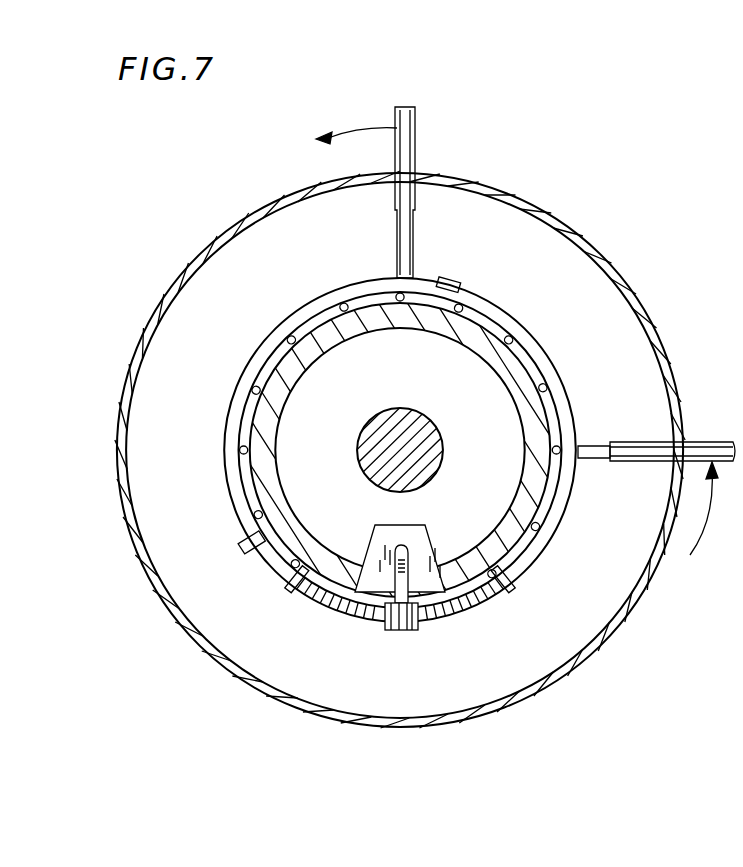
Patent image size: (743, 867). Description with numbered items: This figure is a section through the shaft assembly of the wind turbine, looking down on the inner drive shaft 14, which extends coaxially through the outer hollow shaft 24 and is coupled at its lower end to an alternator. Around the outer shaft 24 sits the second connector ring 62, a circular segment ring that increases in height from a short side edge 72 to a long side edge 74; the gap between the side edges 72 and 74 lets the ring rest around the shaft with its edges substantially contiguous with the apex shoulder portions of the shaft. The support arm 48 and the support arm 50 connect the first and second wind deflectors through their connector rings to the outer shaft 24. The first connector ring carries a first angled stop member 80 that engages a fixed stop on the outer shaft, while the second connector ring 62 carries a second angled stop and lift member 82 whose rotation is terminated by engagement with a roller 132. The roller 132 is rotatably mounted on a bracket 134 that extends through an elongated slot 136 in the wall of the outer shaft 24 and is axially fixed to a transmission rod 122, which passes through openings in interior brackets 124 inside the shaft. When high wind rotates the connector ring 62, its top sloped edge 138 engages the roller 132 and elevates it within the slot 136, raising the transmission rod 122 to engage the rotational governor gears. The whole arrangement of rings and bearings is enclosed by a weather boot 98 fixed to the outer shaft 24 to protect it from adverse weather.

The inner drive shaft 14 is at (420, 448).
The outer hollow shaft 24 is at (497, 353).
The support arm 48 is at (702, 449).
The support arm 50 is at (405, 146).
The second connector ring 62 is at (570, 388).
The short side edge 72 is at (305, 590).
The long side edge 74 is at (483, 600).
The first angled stop member 80 is at (460, 283).
The second angled stop and lift member 82 is at (250, 552).
The weather boot 98 is at (612, 282).
The transmission rod 122 is at (410, 524).
The interior bracket 124 is at (430, 540).
The roller 132 is at (400, 630).
The bracket 134 is at (392, 568).
The elongated slot 136 is at (350, 612).
The top sloped edge 138 is at (542, 538).